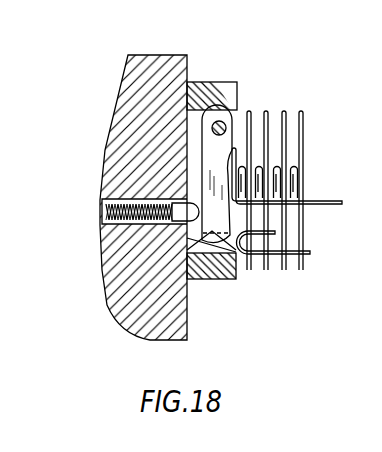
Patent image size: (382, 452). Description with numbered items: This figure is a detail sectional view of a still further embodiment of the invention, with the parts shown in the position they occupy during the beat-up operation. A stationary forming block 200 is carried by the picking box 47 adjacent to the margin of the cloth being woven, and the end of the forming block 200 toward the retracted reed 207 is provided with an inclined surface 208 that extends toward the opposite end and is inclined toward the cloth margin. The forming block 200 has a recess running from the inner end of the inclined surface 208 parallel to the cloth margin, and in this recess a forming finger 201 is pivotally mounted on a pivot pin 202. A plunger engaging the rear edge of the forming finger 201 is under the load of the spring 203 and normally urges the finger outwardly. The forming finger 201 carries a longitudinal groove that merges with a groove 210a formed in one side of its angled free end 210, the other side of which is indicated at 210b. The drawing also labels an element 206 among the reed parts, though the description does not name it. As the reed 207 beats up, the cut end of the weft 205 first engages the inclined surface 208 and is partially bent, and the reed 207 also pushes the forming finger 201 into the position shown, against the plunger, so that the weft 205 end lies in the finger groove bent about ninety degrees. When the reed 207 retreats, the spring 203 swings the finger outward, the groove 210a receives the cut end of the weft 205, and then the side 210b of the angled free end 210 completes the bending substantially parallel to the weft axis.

The picking box 47 is at (160, 55).
The forming block 200 is at (200, 280).
The forming finger 201 is at (236, 108).
The pivot pin 202 is at (238, 116).
The spring 203 is at (101, 212).
The weft 205 is at (318, 203).
The contact pin 206 is at (301, 272).
The reed 207 is at (297, 177).
The inclined surface 208 is at (229, 82).
The angled free end 210 is at (240, 268).
The groove 210a is at (196, 244).
The side of angled free end 210b is at (185, 258).